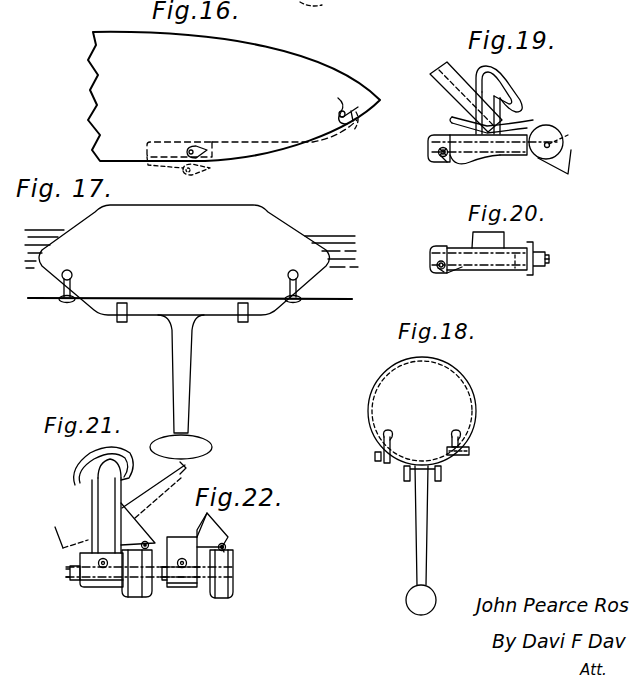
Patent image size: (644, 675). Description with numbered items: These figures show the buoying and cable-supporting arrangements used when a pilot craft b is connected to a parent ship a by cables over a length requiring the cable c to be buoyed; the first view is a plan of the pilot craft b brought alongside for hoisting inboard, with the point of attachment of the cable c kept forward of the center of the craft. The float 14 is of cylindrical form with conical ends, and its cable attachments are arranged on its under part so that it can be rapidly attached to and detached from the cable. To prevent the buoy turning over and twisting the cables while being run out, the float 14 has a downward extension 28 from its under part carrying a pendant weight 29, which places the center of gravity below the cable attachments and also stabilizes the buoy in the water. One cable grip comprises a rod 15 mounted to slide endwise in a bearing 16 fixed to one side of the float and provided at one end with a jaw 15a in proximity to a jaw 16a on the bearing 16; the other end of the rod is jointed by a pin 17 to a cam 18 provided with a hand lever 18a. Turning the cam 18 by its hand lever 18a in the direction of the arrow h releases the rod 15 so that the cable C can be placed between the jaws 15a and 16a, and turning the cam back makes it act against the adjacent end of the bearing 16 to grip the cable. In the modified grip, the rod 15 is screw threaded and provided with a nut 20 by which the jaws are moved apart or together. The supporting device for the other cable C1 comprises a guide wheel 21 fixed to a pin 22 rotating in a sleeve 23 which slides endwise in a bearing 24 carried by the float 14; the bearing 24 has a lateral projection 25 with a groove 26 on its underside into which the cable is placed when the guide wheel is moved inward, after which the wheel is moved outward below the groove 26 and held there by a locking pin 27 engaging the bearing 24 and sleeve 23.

In FIG. 16, the parent ship a is at (234, 96).
In FIG. 16, the pilot craft b is at (199, 143).
In FIG. 16, the cable c is at (252, 138).
In FIG. 20, the cable c is at (432, 267).
In FIG. 19, the float 14 is at (443, 66).
In FIG. 17, the float 14 is at (191, 263).
In FIG. 18, the float 14 is at (422, 419).
In FIG. 21, the float 14 is at (154, 490).
In FIG. 19, the rod 15 is at (444, 135).
In FIG. 20, the rod 15 is at (438, 250).
In FIG. 19, the jaw 15a is at (431, 144).
In FIG. 20, the jaw 15a is at (430, 258).
In FIG. 19, the bearing 16 is at (500, 158).
In FIG. 20, the bearing 16 is at (500, 272).
In FIG. 18, the bearing 16 is at (459, 458).
In FIG. 19, the jaw 16a is at (452, 168).
In FIG. 20, the jaw 16a is at (446, 272).
In FIG. 19, the pin 17 is at (570, 150).
In FIG. 19, the cam 18 is at (546, 163).
In FIG. 19, the hand lever 18a is at (540, 120).
In FIG. 20, the nut 20 is at (542, 276).
In FIG. 21, the nut 20 is at (153, 580).
In FIG. 21, the guide wheel 21 is at (133, 598).
In FIG. 22, the guide wheel 21 is at (225, 592).
In FIG. 21, the pin 22 is at (68, 573).
In FIG. 21, the sleeve 23 is at (78, 585).
In FIG. 22, the sleeve 23 is at (190, 590).
In FIG. 17, the bearing 24 is at (77, 282).
In FIG. 18, the bearing 24 is at (384, 463).
In FIG. 21, the bearing 24 is at (102, 588).
In FIG. 22, the bearing 24 is at (183, 587).
In FIG. 21, the lateral projection 25 is at (135, 532).
In FIG. 22, the lateral projection 25 is at (222, 526).
In FIG. 22, the groove 26 is at (230, 550).
In FIG. 21, the pin 27 is at (104, 559).
In FIG. 17, the downward extension 28 is at (186, 357).
In FIG. 18, the downward extension 28 is at (425, 522).
In FIG. 17, the pendant weight 29 is at (202, 438).
In FIG. 18, the pendant weight 29 is at (428, 585).
In FIG. 19, the cable C is at (441, 162).
In FIG. 21, the cable C1 is at (149, 543).
In FIG. 22, the cable C1 is at (228, 545).
In FIG. 19, the direction arrow h is at (528, 107).